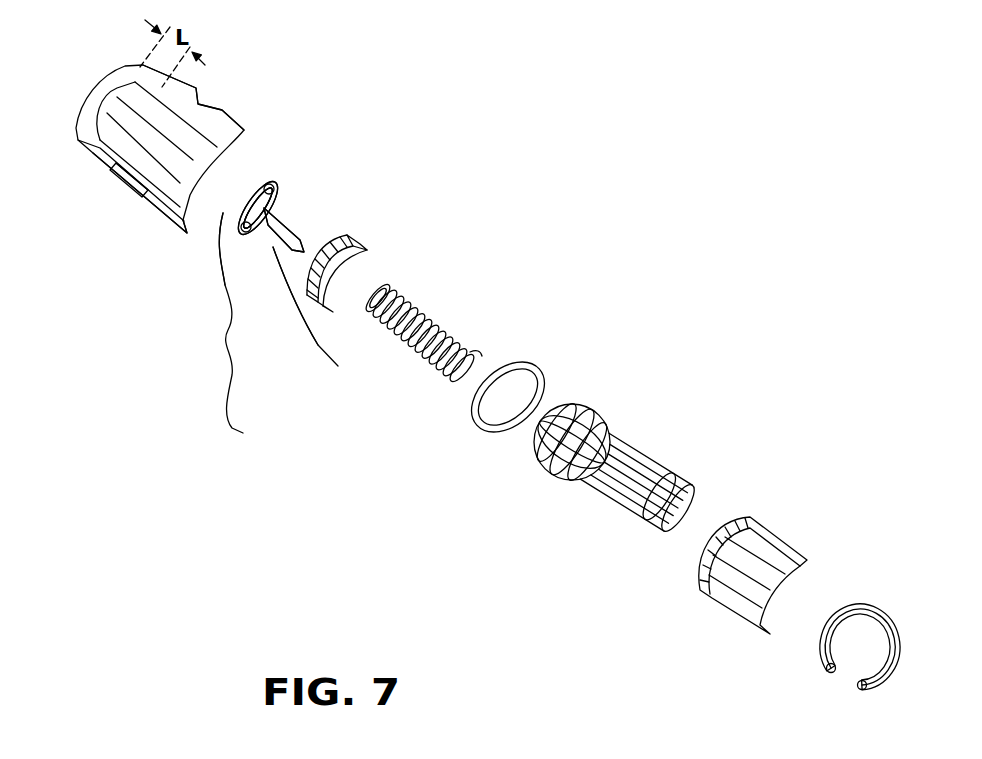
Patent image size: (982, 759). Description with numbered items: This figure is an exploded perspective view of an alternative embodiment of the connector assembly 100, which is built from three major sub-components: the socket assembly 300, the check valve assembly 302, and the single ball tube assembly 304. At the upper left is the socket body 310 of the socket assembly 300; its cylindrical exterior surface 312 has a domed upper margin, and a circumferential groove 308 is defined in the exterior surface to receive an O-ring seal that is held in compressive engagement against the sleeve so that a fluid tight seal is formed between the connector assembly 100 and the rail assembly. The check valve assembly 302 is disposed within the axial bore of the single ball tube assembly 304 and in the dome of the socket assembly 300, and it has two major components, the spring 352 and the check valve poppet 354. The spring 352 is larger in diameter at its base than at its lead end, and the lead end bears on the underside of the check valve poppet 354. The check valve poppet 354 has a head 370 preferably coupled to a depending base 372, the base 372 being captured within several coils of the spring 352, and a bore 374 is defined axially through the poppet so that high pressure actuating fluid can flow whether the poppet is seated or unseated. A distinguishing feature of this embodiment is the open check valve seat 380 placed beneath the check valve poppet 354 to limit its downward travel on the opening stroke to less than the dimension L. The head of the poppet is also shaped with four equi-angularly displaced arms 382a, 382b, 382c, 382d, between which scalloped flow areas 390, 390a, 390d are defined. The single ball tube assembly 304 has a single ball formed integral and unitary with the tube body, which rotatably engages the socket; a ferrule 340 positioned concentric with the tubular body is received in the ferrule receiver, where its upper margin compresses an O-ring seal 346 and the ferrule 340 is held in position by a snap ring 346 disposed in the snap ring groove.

The connector assembly 100 is at (645, 90).
The socket assembly 300 is at (200, 103).
The check valve assembly 302 is at (205, 323).
The single ball tube assembly 304 is at (615, 448).
The circumferential groove 308 is at (140, 200).
The socket body 310 is at (228, 125).
The cylindrical exterior surface 312 is at (175, 223).
The ferrule 340 is at (697, 590).
The snap ring 346 is at (478, 425).
The spring 352 is at (460, 338).
The check valve poppet 354 is at (276, 186).
The head 370 is at (258, 170).
The depending base 372 is at (338, 366).
The bore 374 is at (238, 188).
The open check valve seat 380 is at (358, 248).
The arm 382a is at (226, 292).
The arm 382b is at (280, 224).
The arm 382c is at (275, 196).
The arm 382d is at (117, 179).
The scalloped flow area 390 is at (280, 205).
The scalloped flow area 390a is at (325, 338).
The scalloped flow area 390d is at (223, 213).